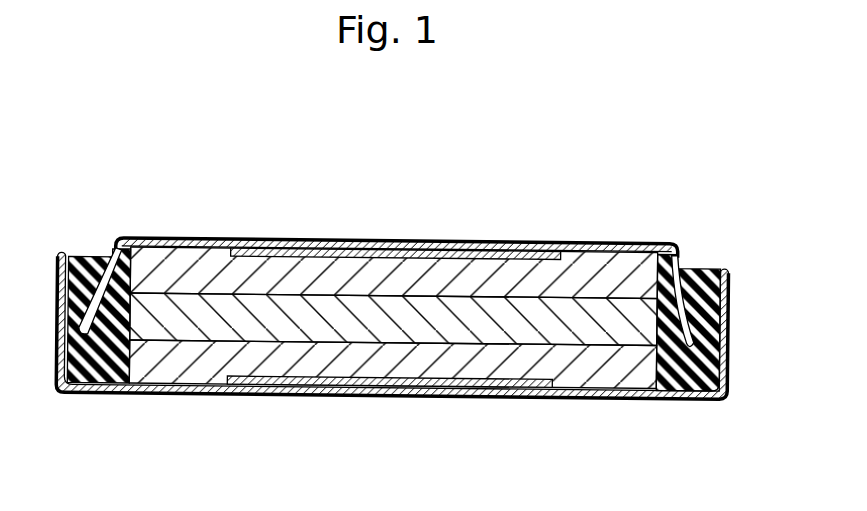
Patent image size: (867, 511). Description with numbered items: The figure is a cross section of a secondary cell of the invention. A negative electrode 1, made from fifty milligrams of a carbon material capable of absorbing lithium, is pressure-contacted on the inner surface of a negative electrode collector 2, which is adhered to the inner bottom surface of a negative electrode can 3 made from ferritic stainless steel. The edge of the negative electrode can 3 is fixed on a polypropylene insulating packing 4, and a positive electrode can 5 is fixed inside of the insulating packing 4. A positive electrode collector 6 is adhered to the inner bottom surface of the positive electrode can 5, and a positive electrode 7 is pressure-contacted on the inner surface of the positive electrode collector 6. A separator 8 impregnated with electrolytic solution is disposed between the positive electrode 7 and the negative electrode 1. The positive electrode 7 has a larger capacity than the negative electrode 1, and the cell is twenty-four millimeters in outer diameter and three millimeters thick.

The negative electrode 1 is at (365, 275).
The negative electrode collector 2 is at (484, 243).
The negative electrode can 3 is at (158, 238).
The insulating packing 4 is at (729, 308).
The positive electrode can 5 is at (645, 402).
The positive electrode collector 6 is at (488, 388).
The positive electrode 7 is at (277, 362).
The separator 8 is at (175, 320).